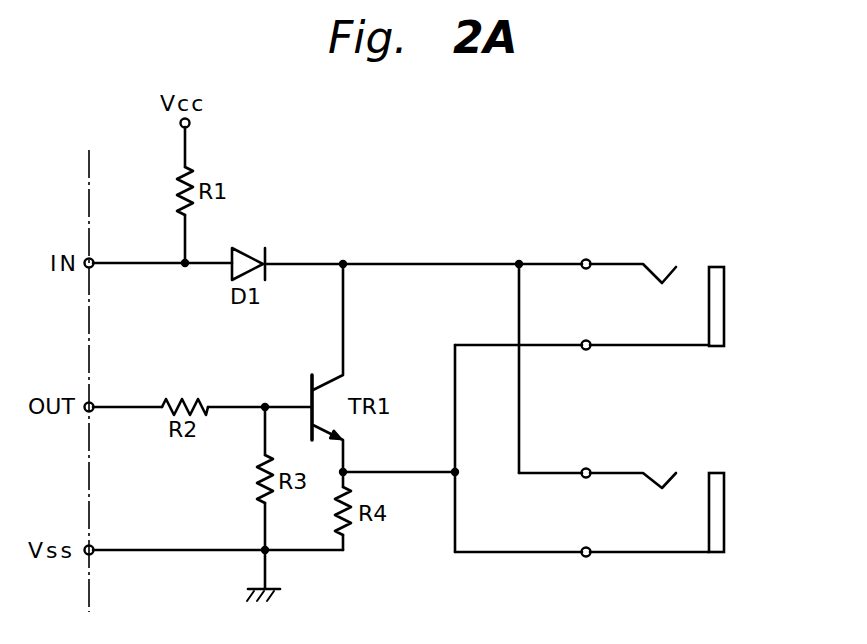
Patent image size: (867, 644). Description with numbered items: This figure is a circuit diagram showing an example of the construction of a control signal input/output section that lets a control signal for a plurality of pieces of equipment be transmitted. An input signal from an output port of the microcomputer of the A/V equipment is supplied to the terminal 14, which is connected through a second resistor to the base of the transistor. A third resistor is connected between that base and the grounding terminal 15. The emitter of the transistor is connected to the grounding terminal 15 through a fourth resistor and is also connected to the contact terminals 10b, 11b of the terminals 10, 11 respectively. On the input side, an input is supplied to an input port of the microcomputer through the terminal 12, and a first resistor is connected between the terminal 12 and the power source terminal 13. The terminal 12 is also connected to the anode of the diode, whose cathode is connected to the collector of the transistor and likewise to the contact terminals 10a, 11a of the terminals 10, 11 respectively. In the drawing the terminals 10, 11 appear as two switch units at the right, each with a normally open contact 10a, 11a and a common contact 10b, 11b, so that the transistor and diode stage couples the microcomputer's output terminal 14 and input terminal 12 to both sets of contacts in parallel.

The terminal 10 is at (731, 300).
The contact terminal 10a is at (612, 262).
The contact terminal 10b is at (612, 342).
The terminal 11 is at (733, 513).
The contact terminal 11a is at (610, 464).
The contact terminal 11b is at (612, 548).
The terminal 12 is at (92, 260).
The power source terminal 13 is at (190, 124).
The terminal 14 is at (92, 404).
The grounding terminal 15 is at (92, 547).